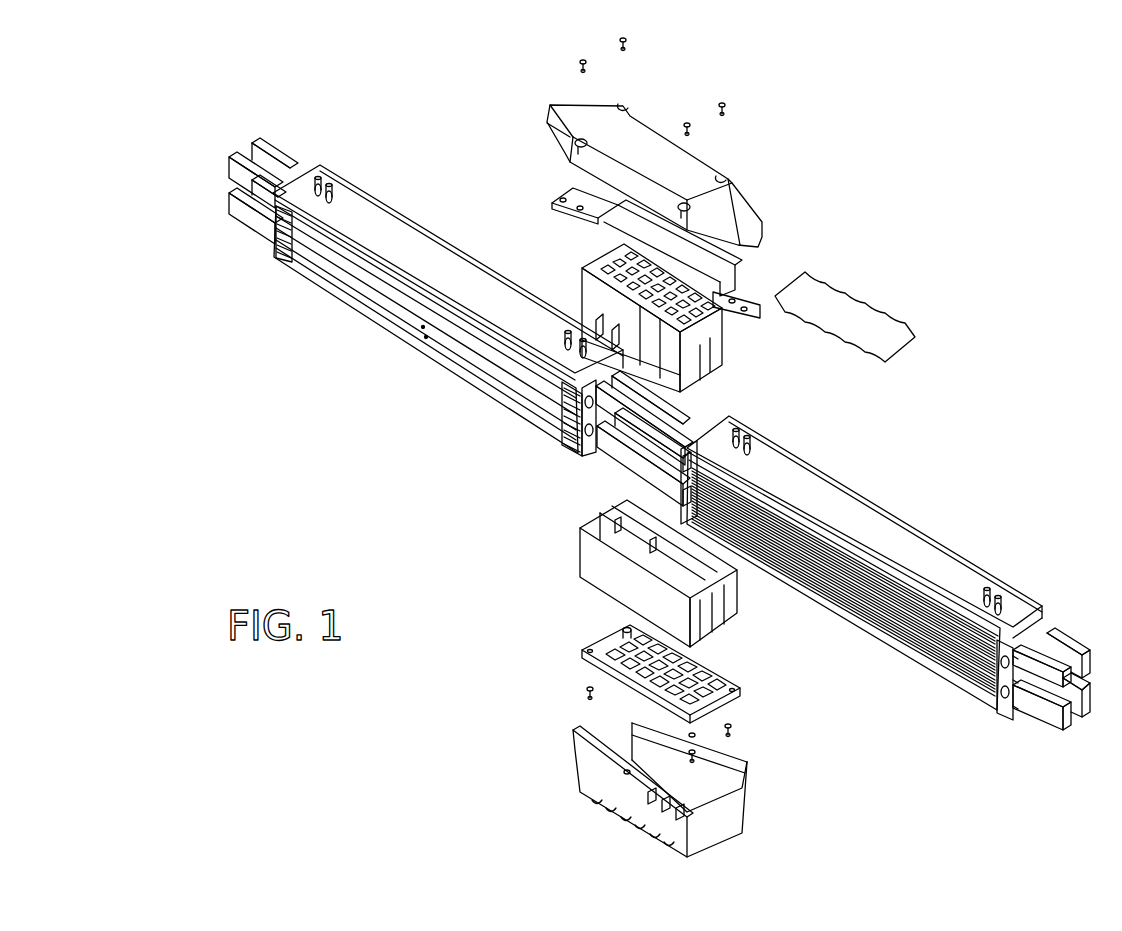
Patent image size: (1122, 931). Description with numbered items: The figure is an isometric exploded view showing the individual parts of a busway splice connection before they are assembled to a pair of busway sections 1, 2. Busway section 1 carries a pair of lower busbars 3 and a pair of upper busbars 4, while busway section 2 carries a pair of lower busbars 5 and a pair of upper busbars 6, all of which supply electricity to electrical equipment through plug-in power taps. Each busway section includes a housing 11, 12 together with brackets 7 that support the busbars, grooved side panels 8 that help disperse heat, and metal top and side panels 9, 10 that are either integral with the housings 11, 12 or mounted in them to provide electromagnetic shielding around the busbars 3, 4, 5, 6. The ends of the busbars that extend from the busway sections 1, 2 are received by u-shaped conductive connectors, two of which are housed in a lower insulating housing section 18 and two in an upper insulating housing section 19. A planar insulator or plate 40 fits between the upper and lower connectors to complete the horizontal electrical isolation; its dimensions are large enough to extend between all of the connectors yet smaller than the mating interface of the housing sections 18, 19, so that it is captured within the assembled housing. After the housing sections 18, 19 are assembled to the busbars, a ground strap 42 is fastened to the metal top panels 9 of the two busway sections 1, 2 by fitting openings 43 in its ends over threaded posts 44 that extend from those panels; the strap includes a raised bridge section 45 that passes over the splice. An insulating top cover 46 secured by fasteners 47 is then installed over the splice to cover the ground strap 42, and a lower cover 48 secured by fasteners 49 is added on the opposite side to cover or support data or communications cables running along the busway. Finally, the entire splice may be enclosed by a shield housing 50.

The busway section 1 is at (372, 158).
The busway section 2 is at (962, 478).
The lower busbars 3 is at (243, 220).
The upper busbars 4 is at (250, 148).
The lower busbars 5 is at (658, 475).
The upper busbars 6 is at (665, 438).
The brackets 7 is at (560, 408).
The grooved side panels 8 is at (970, 683).
The metal top panels 9 is at (405, 238).
The metal side panels 10 is at (387, 318).
The housing 11 is at (336, 285).
The housing 12 is at (960, 577).
The lower insulating housing section 18 is at (737, 595).
The upper insulating housing section 19 is at (583, 297).
The planar insulator 40 is at (860, 310).
The ground strap 42 is at (548, 190).
The openings 43 is at (757, 313).
The threaded posts 44 is at (700, 455).
The raised bridge section 45 is at (692, 258).
The insulating top cover 46 is at (742, 198).
The fasteners 47 is at (617, 40).
The lower cover 48 is at (740, 688).
The fasteners 49 is at (586, 690).
The shield housing 50 is at (717, 830).